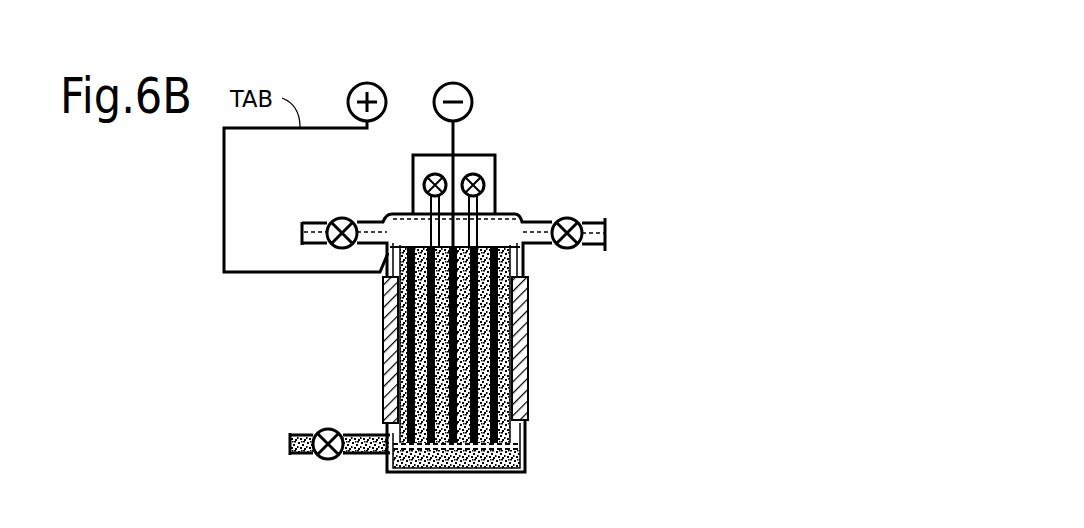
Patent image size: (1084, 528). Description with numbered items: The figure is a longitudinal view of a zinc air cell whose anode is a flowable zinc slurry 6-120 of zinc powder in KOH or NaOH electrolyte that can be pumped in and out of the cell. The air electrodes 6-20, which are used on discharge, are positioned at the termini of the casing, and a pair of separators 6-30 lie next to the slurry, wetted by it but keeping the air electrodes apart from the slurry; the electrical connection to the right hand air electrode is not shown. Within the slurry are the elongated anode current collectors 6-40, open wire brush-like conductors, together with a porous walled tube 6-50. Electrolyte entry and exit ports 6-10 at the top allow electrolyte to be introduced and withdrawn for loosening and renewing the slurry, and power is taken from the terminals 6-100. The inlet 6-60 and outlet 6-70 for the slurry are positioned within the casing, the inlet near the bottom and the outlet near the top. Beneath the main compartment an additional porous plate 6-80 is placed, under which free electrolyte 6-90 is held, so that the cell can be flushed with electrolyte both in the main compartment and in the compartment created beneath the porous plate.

The electrolyte entry/exit ports 6-10 is at (481, 179).
The air electrode 6-20 is at (383, 305).
The separator 6-30 is at (401, 242).
The anode current collector 6-40 is at (520, 312).
The porous walled tube 6-50 is at (383, 316).
The inlet 6-60 is at (291, 443).
The outlet 6-70 is at (607, 235).
The porous substrate or plate 6-80 is at (523, 442).
The free electrolyte 6-90 is at (523, 456).
The terminal 6-100 is at (388, 77).
The zinc slurry 6-120 is at (527, 379).